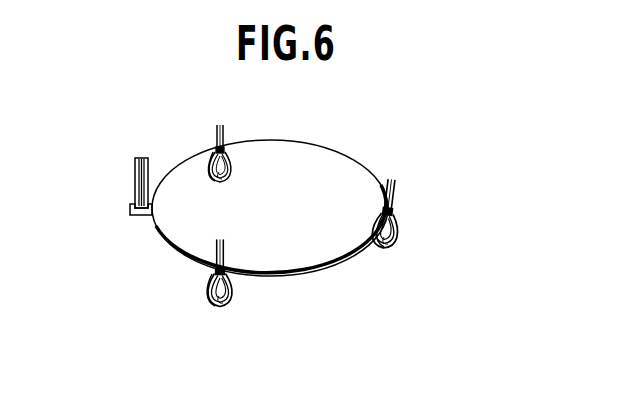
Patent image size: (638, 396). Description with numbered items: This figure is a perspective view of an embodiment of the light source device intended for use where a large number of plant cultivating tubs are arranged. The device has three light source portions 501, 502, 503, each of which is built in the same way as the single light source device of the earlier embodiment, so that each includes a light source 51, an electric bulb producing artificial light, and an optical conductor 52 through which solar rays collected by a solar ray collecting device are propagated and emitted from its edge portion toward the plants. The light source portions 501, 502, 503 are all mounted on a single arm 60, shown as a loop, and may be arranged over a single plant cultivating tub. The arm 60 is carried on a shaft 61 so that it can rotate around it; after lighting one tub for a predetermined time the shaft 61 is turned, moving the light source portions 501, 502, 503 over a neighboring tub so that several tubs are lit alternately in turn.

The arm 60 is at (319, 141).
The shaft 61 is at (135, 169).
The light source 51 is at (218, 178).
The optical conductor 52 is at (230, 166).
The light source portion 501 is at (226, 311).
The light source portion 502 is at (391, 255).
The light source portion 503 is at (227, 183).